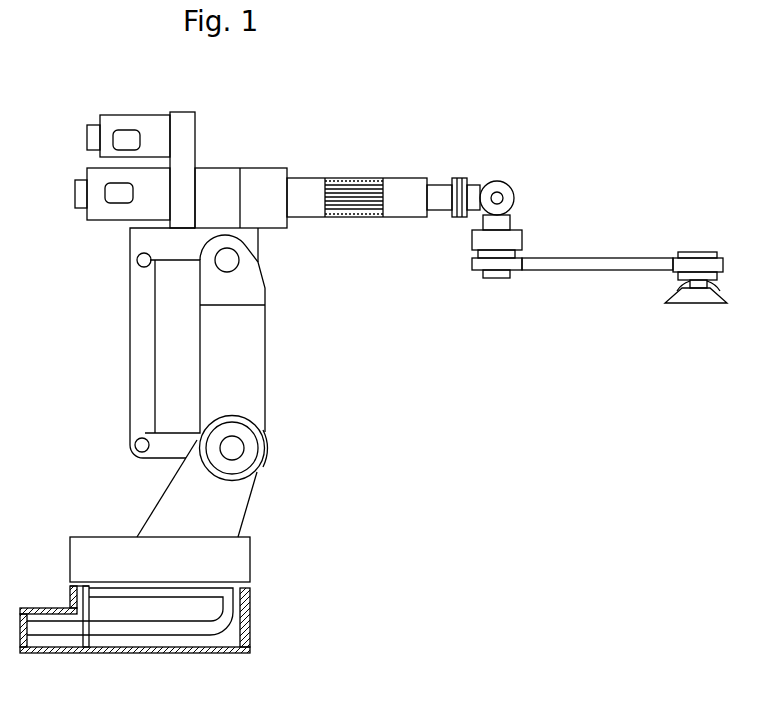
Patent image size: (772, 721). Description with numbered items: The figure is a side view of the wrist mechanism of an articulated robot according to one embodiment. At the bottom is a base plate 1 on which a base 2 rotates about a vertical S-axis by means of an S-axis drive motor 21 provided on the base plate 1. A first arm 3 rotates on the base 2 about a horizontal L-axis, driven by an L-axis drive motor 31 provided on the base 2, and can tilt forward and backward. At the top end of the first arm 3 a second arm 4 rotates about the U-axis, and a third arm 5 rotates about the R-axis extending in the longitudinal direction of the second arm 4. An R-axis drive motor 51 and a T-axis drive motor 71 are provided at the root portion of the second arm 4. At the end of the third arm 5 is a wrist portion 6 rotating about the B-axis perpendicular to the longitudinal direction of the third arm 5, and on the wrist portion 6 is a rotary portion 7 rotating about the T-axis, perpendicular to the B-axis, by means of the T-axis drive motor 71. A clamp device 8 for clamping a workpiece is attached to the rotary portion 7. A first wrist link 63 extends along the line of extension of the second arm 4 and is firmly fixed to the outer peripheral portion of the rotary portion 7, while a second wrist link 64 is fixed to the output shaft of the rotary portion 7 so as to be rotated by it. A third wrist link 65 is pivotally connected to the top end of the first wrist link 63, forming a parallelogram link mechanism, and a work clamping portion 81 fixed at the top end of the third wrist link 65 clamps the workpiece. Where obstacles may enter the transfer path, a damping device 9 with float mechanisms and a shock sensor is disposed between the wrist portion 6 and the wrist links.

The base plate 1 is at (251, 632).
The base 2 is at (251, 566).
The S-axis drive motor 21 is at (130, 607).
The first arm 3 is at (260, 370).
The L-axis drive motor 31 is at (246, 460).
The second arm 4 is at (352, 178).
The third arm 5 is at (437, 185).
The wrist portion 6 is at (498, 182).
The rotary portion 7 is at (510, 216).
The clamp device 8 is at (644, 287).
The damping device 9 is at (478, 240).
The R-axis drive motor 51 is at (112, 214).
The first wrist link 63 is at (594, 265).
The second wrist link 64 is at (496, 277).
The third wrist link 65 is at (712, 284).
The T-axis drive motor 71 is at (130, 120).
The work clamping portion 81 is at (690, 303).